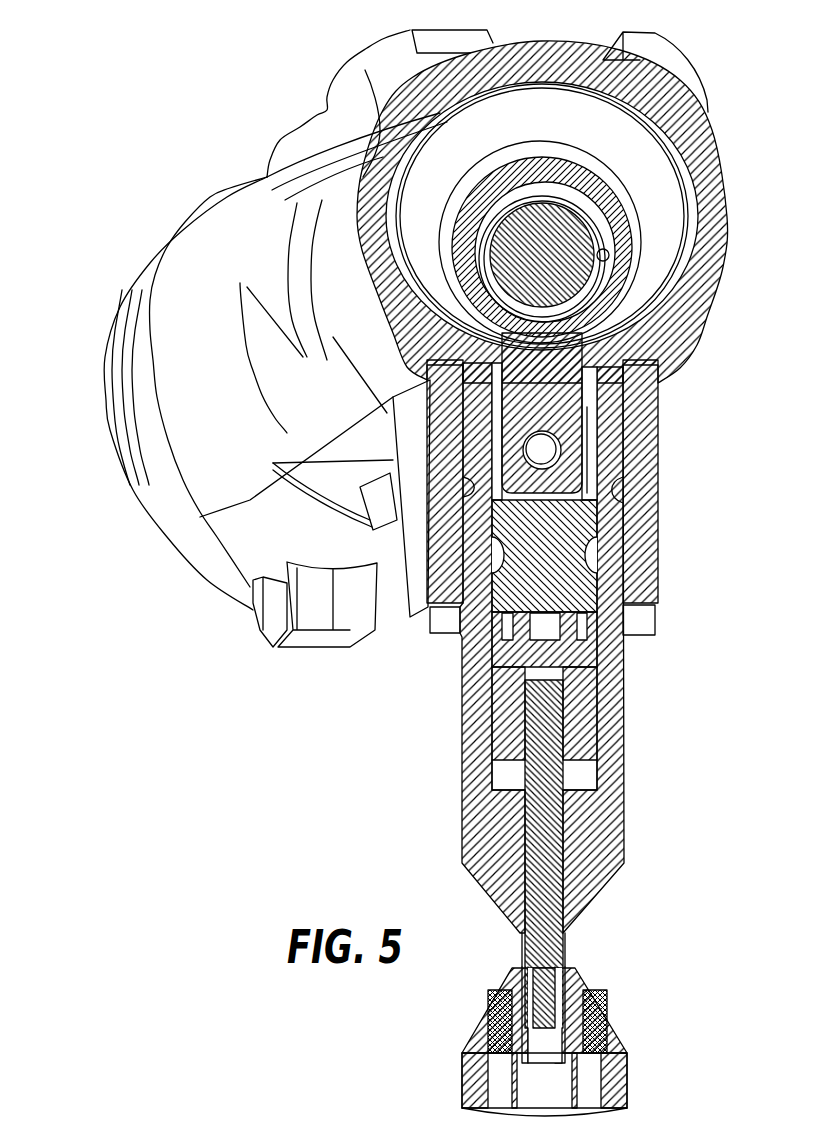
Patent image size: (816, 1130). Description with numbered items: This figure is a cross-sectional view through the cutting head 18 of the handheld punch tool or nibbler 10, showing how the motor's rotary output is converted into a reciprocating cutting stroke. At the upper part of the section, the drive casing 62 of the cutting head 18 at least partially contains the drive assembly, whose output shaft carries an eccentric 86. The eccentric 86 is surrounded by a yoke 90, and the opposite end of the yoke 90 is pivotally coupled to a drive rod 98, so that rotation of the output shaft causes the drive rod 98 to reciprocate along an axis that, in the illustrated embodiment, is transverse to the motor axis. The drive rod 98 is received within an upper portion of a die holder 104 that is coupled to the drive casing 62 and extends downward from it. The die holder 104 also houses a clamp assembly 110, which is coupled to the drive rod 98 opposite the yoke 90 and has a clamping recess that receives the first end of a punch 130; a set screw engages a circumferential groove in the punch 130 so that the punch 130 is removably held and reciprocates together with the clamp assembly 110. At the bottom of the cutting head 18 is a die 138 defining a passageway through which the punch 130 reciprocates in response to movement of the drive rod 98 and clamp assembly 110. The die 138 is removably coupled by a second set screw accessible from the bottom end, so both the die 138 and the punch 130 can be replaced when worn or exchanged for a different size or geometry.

The nibbler 10 is at (135, 602).
The cutting head 18 is at (575, 318).
The drive casing 62 is at (687, 127).
The eccentric 86 is at (620, 311).
The yoke 90 is at (622, 208).
The drive rod 98 is at (547, 563).
The die holder 104 is at (615, 883).
The clamp assembly 110 is at (578, 718).
The punch 130 is at (543, 823).
The die 138 is at (620, 1043).